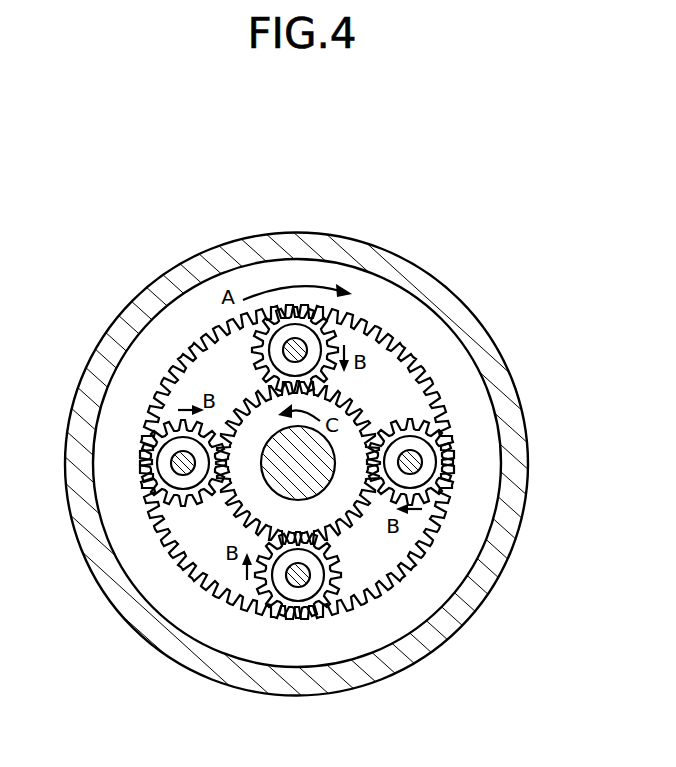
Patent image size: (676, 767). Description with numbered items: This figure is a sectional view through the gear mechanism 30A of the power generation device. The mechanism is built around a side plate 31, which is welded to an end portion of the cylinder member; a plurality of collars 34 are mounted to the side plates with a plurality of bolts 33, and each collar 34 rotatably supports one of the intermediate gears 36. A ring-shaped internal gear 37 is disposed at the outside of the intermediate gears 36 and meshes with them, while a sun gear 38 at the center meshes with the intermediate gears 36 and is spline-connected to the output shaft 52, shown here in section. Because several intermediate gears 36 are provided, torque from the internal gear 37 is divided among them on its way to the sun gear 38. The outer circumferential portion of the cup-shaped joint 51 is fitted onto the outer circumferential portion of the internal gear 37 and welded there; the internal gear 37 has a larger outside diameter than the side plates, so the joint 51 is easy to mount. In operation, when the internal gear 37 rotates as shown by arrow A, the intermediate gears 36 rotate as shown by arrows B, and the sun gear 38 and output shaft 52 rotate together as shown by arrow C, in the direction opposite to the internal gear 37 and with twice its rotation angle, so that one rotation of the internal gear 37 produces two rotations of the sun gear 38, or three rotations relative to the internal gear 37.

The gear mechanism 30A is at (178, 202).
The side plate 31 is at (146, 568).
The bolt 33 is at (302, 348).
The collar 34 is at (332, 312).
The intermediate gear 36 is at (318, 362).
The internal gear 37 is at (182, 318).
The sun gear 38 is at (328, 484).
The cup-shaped joint 51 is at (224, 250).
The output shaft 52 is at (323, 512).